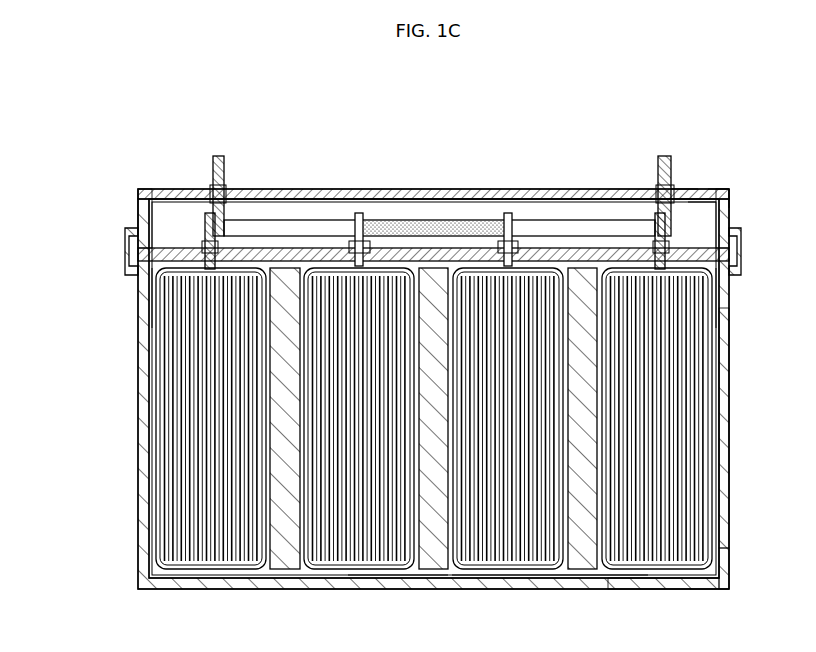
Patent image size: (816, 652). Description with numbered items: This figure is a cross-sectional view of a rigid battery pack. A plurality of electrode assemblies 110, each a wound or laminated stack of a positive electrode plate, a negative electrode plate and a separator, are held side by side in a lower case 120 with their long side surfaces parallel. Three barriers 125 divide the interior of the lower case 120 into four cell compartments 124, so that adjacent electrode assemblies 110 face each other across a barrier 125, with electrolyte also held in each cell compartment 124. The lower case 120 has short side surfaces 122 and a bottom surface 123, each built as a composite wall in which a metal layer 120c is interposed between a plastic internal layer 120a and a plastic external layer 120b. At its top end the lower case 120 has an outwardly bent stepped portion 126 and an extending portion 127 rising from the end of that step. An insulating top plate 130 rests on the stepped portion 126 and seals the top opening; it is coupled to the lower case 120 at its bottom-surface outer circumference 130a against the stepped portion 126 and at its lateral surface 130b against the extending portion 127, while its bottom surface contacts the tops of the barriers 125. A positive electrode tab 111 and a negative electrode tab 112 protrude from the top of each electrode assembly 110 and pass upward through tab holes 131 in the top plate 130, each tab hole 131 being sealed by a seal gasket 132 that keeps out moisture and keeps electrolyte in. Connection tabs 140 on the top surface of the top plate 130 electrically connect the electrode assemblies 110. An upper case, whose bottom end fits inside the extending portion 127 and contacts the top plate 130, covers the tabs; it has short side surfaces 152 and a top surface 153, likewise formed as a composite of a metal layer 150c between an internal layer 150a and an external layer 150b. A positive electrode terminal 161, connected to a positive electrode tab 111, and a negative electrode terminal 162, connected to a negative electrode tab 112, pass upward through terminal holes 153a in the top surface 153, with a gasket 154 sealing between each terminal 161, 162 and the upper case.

The electrode assembly 110 is at (340, 570).
The positive electrode tab 111 is at (197, 212).
The negative electrode tab 112 is at (643, 219).
The lower case 120 is at (727, 420).
The internal layer 120a is at (708, 581).
The external layer 120b is at (652, 581).
The metal layer 120c is at (600, 581).
The short side surface 122 is at (721, 480).
The bottom surface 123 is at (470, 581).
The cell compartment 124 is at (388, 581).
The barrier 125 is at (426, 545).
The stepped portion 126 is at (721, 280).
The extending portion 127 is at (735, 243).
The top plate 130 is at (686, 252).
The bottom-surface outer circumference 130a is at (130, 290).
The lateral surface 130b is at (118, 241).
The tab hole 131 is at (475, 238).
The seal gasket 132 is at (520, 236).
The connection tab 140 is at (375, 213).
The internal layer 150a is at (690, 184).
The external layer 150b is at (725, 200).
The metal layer 150c is at (721, 182).
The short side surface 152 is at (130, 188).
The top surface 153 is at (305, 181).
The terminal hole 153a is at (665, 178).
The gasket 154 is at (652, 184).
The positive electrode terminal 161 is at (210, 148).
The negative electrode terminal 162 is at (655, 148).